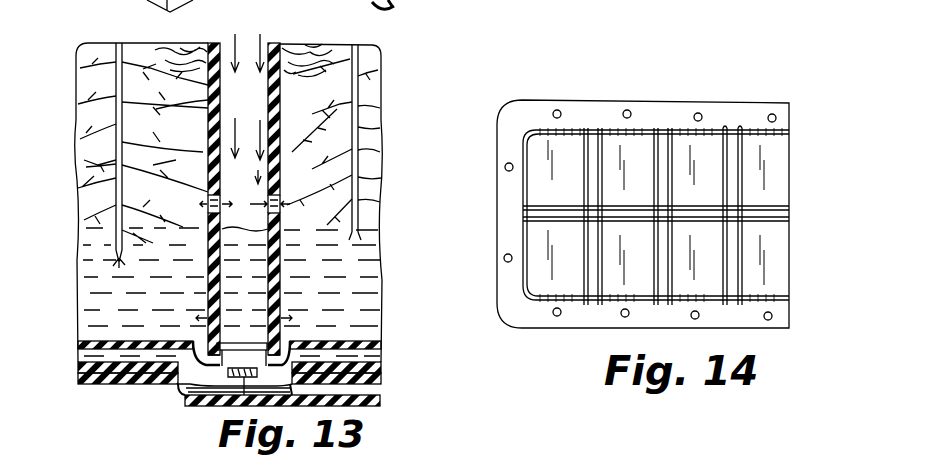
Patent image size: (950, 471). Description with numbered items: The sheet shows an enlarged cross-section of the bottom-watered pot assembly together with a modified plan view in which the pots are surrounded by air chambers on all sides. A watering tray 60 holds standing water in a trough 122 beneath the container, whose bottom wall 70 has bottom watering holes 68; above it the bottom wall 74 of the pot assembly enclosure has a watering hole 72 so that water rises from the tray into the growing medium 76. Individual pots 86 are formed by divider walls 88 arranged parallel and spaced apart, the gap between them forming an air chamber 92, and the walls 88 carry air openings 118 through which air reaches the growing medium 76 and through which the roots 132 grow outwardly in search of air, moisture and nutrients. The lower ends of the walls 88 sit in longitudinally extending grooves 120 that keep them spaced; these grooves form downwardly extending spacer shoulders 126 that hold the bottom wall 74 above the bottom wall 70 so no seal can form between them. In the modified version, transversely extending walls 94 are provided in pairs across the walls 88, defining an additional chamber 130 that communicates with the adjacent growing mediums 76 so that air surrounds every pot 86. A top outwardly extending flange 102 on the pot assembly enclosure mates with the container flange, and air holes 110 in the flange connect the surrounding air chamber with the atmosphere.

In FIG. 13, the watering tray 60 is at (378, 392).
In FIG. 13, the bottom watering holes 68 is at (250, 367).
In FIG. 13, the bottom wall 70 is at (364, 362).
In FIG. 13, the watering holes 72 is at (237, 352).
In FIG. 13, the bottom wall 74 is at (368, 342).
In FIG. 13, the growing medium 76 is at (193, 40).
In FIG. 13, the individual pots 86 is at (213, 40).
In FIG. 14, the individual pots 86 is at (612, 145).
In FIG. 13, the divider walls 88 is at (272, 42).
In FIG. 14, the divider walls 88 is at (785, 218).
In FIG. 13, the air chamber 92 is at (252, 190).
In FIG. 14, the air chamber 92 is at (524, 213).
In FIG. 14, the transversely extending walls 94 is at (658, 128).
In FIG. 14, the top outwardly extending flange 102 is at (528, 100).
In FIG. 14, the air holes 110 is at (620, 314).
In FIG. 13, the air openings 118 is at (213, 196).
In FIG. 13, the longitudinally extending grooves 120 is at (210, 302).
In FIG. 13, the trough 122 is at (193, 353).
In FIG. 13, the spacer shoulders 126 is at (180, 402).
In FIG. 14, the additional chamber 130 is at (728, 128).
In FIG. 13, the roots 132 is at (78, 184).